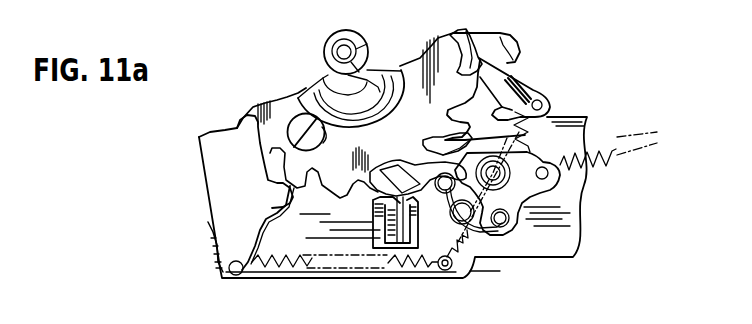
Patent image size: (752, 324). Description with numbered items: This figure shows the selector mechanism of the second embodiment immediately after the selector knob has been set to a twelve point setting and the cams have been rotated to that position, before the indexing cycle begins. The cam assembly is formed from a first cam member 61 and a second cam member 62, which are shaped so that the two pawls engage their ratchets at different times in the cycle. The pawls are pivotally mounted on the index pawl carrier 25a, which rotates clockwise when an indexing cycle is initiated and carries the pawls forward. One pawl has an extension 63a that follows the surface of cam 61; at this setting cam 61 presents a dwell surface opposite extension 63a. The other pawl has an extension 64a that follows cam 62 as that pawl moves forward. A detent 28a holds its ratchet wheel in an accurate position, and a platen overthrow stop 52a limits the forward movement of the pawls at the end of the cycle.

The index pawl carrier 25a is at (493, 45).
The detent 28a is at (218, 188).
The platen overthrow stop 52a is at (298, 192).
The first cam member 61 is at (383, 170).
The second cam member 62 is at (380, 174).
The extension 63a is at (401, 200).
The extension 64a is at (419, 217).